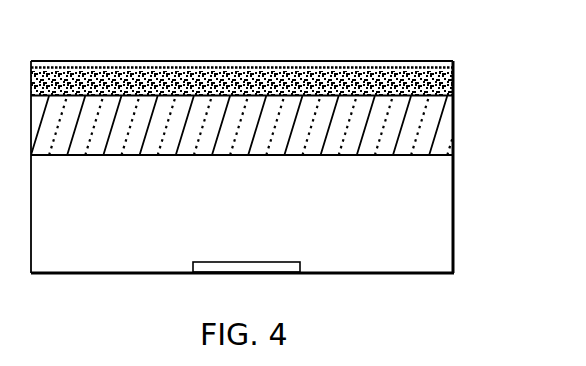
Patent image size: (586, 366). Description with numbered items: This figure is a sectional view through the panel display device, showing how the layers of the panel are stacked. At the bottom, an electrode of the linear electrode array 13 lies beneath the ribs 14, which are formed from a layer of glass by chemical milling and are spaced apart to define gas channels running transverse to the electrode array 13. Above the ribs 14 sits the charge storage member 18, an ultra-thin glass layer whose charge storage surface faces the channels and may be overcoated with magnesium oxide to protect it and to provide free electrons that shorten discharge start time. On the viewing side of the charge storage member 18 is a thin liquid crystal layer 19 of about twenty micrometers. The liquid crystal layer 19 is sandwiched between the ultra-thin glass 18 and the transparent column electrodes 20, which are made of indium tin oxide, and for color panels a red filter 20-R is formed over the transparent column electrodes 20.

The electrode array 13 is at (300, 266).
The ribs 14 is at (443, 225).
The charge storage member 18 is at (438, 132).
The liquid crystal layer 19 is at (455, 82).
The transparent column electrodes 20 is at (455, 68).
The red filter 20-R is at (408, 61).